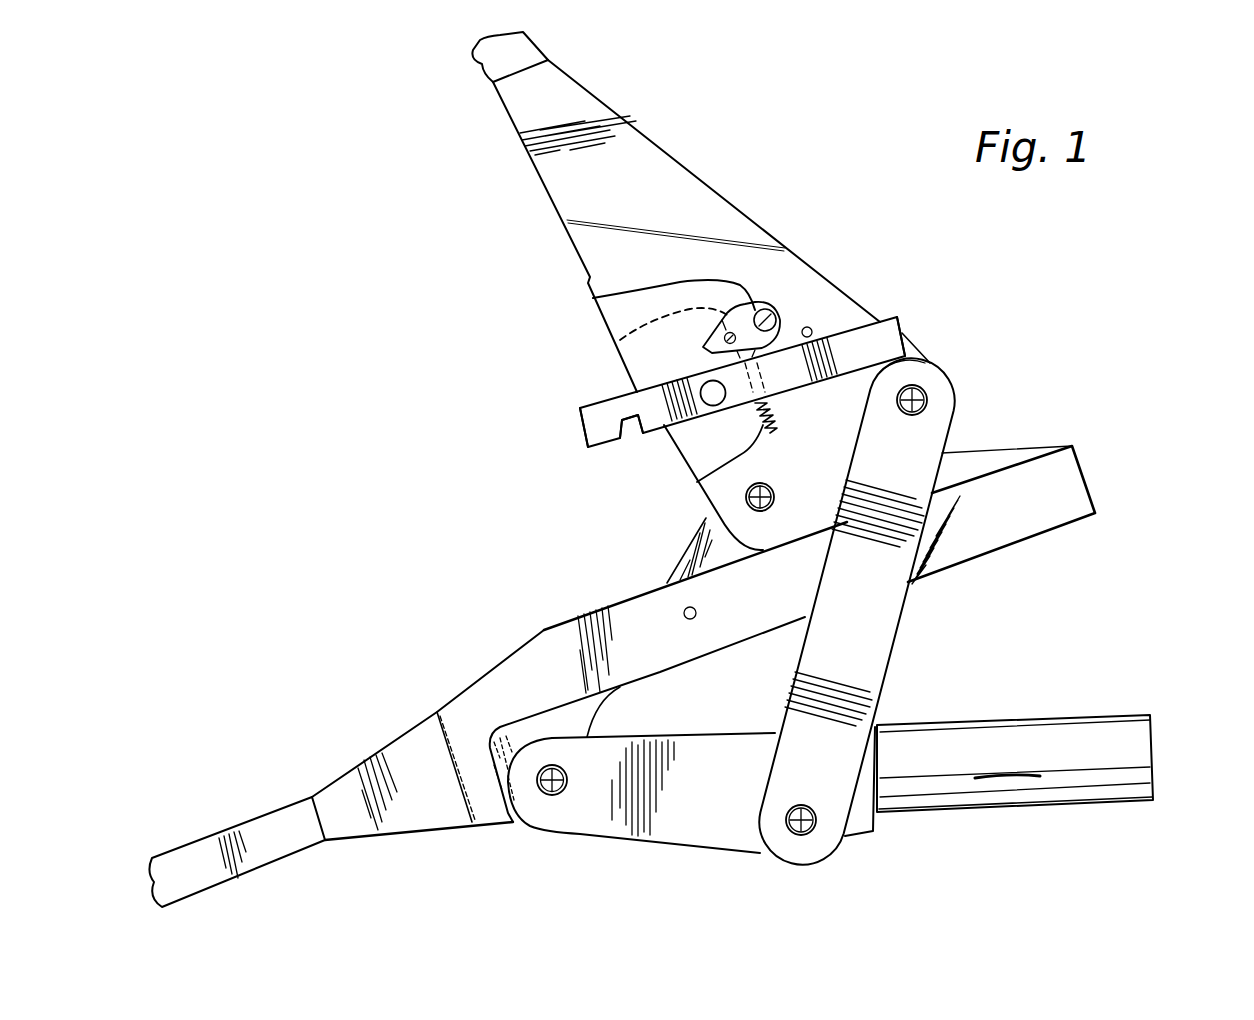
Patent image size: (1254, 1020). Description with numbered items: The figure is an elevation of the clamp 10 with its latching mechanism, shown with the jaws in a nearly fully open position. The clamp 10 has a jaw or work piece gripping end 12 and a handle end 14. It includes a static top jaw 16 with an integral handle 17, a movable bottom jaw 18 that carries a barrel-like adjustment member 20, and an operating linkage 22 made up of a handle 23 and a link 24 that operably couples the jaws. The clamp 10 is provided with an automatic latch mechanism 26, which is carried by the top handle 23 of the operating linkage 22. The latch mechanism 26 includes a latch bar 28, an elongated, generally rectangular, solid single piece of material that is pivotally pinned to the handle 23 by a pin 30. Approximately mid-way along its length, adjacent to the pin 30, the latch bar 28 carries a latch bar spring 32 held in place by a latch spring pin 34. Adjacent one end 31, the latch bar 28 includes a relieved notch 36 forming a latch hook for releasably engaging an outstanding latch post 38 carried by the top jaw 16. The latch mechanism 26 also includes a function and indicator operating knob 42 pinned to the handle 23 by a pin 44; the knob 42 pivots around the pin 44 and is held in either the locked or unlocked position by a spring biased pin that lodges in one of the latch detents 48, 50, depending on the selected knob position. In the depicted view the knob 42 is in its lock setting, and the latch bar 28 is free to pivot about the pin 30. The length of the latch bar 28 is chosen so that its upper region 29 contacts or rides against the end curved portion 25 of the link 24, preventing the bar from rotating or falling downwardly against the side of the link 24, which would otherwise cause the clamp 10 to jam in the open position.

The clamp 10 is at (1130, 405).
The jaw or work piece gripping end 12 is at (1153, 625).
The handle end 14 is at (198, 752).
The static top jaw 16 is at (494, 678).
The integral handle 17 is at (255, 838).
The movable bottom jaw 18 is at (700, 806).
The barrel-like adjustment member 20 is at (1084, 762).
The operating linkage 22 is at (1000, 334).
The handle 23 is at (633, 156).
The link 24 is at (866, 628).
The end curved portion 25 is at (932, 368).
The automatic latch mechanism 26 is at (918, 311).
The latch bar 28 is at (852, 349).
The upper region 29 is at (905, 330).
The pin 30 is at (713, 395).
The end 31 is at (587, 427).
The latch bar spring 32 is at (773, 423).
The latch spring pin 34 is at (700, 476).
The relieved notch 36 is at (630, 432).
The latch post 38 is at (684, 612).
The function and indicator operating knob 42 is at (593, 298).
The pin 44 is at (773, 307).
The latch detent 48 is at (808, 327).
The latch detent 50 is at (615, 343).